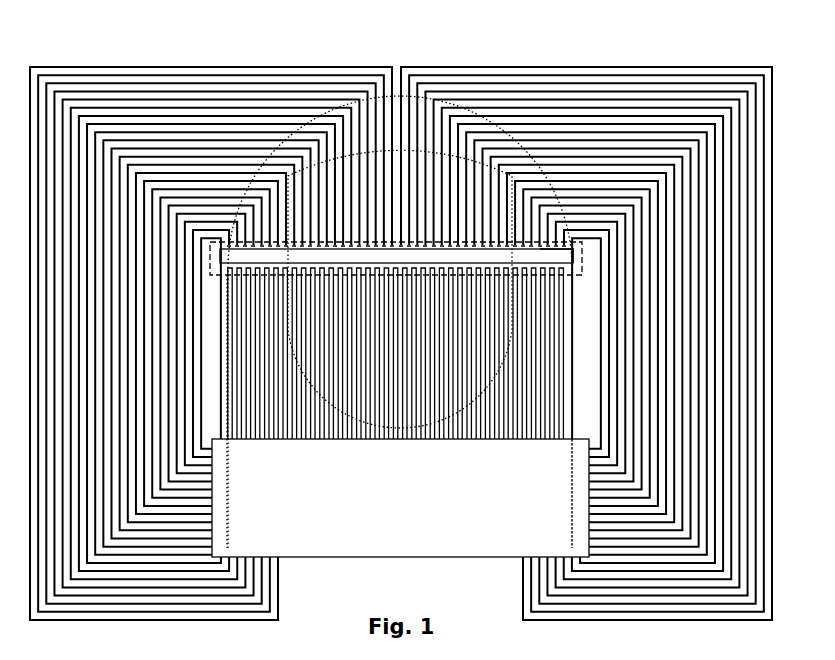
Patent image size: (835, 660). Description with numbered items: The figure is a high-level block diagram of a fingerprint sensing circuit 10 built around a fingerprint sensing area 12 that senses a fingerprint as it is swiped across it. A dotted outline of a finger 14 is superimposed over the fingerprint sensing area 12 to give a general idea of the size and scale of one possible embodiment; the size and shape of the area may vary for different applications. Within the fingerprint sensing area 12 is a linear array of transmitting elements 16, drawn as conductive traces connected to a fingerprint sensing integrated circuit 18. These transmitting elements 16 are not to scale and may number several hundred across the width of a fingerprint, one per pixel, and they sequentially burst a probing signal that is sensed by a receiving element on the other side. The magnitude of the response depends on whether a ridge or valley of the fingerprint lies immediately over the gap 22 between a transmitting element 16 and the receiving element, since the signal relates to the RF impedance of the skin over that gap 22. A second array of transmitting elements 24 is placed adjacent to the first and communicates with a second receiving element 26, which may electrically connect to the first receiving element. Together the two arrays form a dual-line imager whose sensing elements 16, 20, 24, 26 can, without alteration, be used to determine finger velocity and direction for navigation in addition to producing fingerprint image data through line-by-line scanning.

The fingerprint sensing circuit 10 is at (116, 47).
The fingerprint sensing area 12 is at (209, 276).
The finger 14 is at (429, 95).
The transmitting elements 16 is at (525, 278).
The fingerprint sensing integrated circuit 18 is at (555, 549).
The sensing element 20 is at (552, 266).
The gap 22 is at (578, 267).
The second array of transmitting elements 24 is at (525, 243).
The second receiving element 26 is at (552, 250).